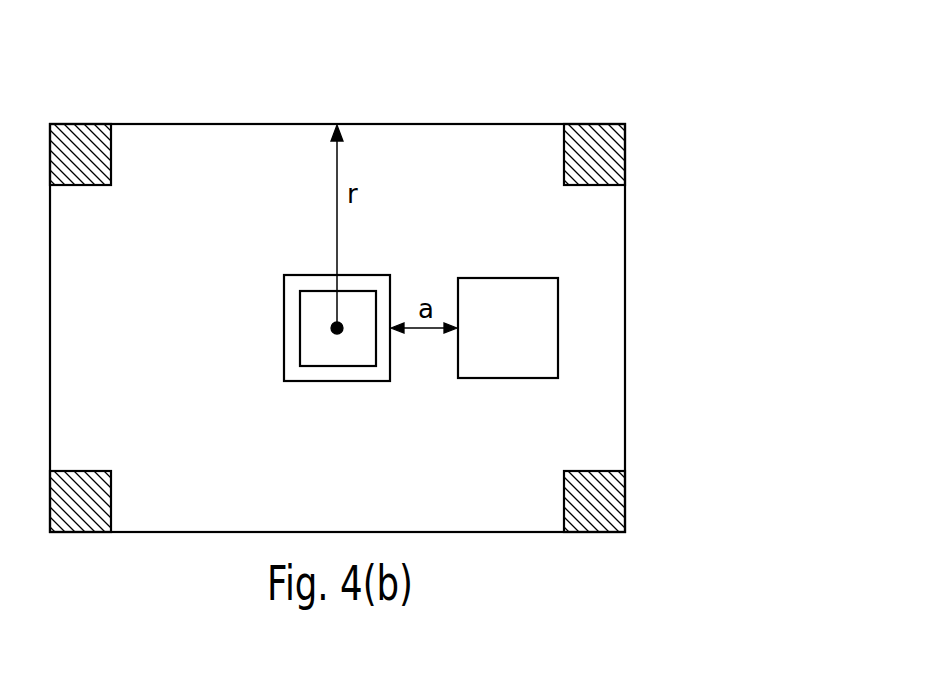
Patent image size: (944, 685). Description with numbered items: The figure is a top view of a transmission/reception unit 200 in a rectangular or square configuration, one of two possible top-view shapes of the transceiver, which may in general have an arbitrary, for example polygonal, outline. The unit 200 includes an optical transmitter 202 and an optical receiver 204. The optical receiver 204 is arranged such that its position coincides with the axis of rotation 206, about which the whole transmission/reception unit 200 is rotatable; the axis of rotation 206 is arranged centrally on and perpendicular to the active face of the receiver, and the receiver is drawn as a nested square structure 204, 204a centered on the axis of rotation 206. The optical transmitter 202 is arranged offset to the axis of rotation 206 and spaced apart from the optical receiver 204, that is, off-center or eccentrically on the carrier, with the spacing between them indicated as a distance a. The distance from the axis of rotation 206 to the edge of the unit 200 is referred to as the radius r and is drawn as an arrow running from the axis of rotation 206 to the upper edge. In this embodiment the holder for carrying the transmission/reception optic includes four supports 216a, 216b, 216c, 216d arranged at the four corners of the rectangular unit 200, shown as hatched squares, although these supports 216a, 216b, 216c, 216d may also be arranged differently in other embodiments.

The transmission/reception unit 200 is at (607, 98).
The optical transmitter 202 is at (510, 278).
The optical receiver 204 is at (327, 381).
The inner alignment mark 204a is at (362, 368).
The axis of rotation 206 is at (332, 326).
The support 216a is at (564, 150).
The support 216b is at (564, 498).
The support 216c is at (111, 160).
The support 216d is at (111, 505).